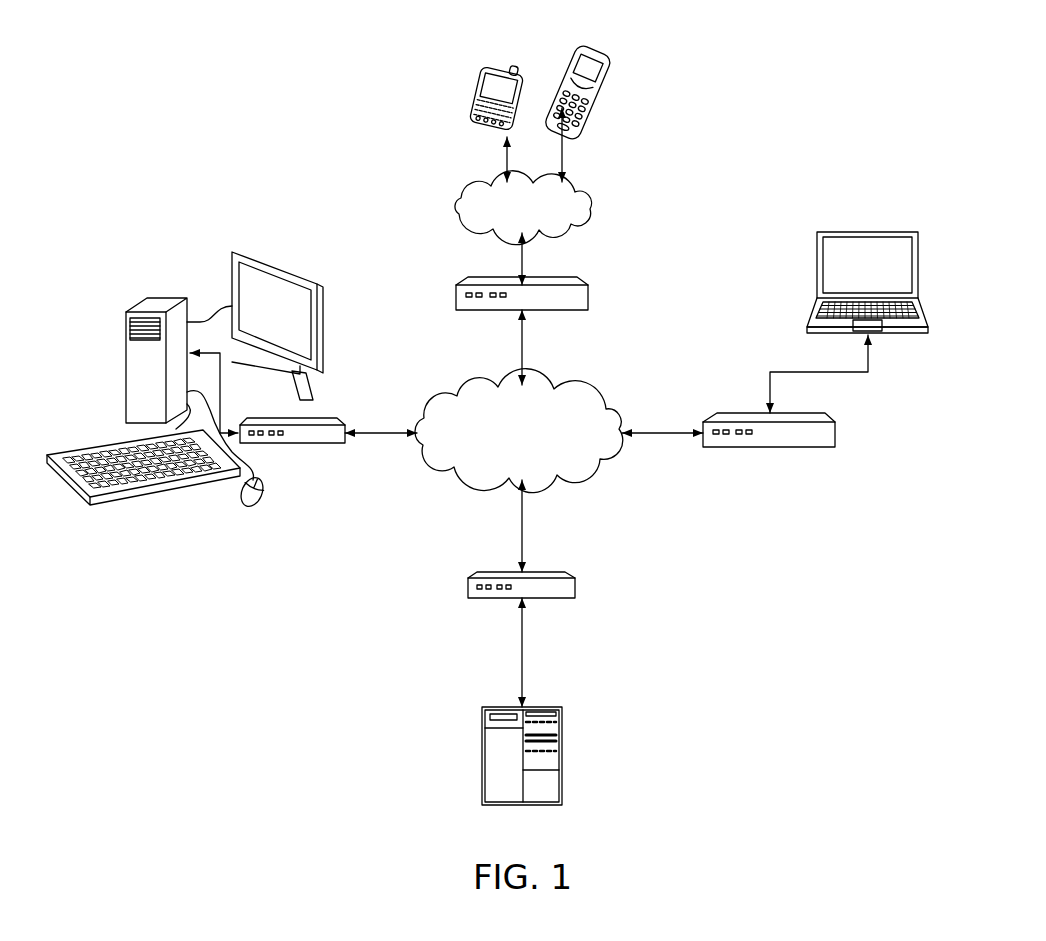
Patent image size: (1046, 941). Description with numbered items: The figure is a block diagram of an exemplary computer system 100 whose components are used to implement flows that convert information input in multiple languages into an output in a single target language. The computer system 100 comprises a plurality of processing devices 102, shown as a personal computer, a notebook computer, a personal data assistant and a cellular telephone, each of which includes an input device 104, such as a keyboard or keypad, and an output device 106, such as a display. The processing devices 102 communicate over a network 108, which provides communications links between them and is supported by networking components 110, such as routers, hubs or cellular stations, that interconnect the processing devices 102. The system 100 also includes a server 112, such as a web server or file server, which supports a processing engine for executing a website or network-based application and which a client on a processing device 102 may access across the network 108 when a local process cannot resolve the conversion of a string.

The computer system 100 is at (742, 102).
The processing device 102 is at (473, 102).
The input device 104 is at (146, 487).
The output device 106 is at (323, 325).
The network 108 is at (593, 203).
The networking component 110 is at (590, 300).
The server 112 is at (563, 757).